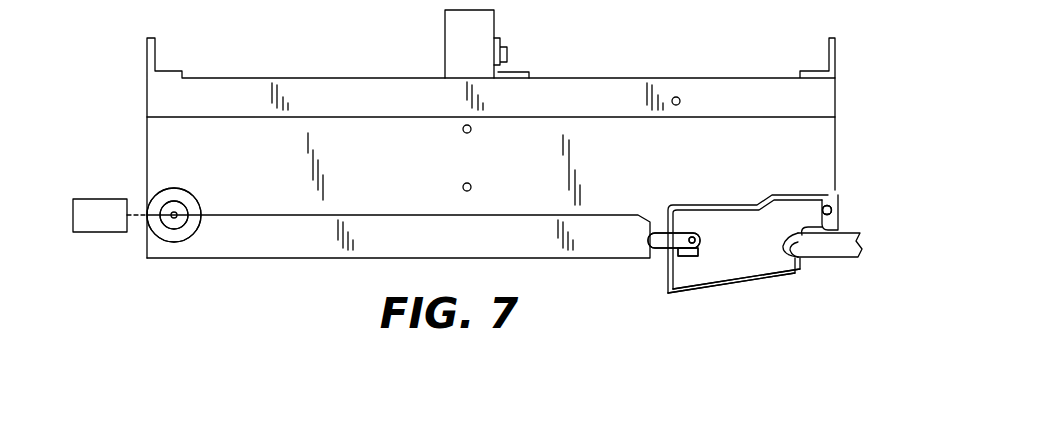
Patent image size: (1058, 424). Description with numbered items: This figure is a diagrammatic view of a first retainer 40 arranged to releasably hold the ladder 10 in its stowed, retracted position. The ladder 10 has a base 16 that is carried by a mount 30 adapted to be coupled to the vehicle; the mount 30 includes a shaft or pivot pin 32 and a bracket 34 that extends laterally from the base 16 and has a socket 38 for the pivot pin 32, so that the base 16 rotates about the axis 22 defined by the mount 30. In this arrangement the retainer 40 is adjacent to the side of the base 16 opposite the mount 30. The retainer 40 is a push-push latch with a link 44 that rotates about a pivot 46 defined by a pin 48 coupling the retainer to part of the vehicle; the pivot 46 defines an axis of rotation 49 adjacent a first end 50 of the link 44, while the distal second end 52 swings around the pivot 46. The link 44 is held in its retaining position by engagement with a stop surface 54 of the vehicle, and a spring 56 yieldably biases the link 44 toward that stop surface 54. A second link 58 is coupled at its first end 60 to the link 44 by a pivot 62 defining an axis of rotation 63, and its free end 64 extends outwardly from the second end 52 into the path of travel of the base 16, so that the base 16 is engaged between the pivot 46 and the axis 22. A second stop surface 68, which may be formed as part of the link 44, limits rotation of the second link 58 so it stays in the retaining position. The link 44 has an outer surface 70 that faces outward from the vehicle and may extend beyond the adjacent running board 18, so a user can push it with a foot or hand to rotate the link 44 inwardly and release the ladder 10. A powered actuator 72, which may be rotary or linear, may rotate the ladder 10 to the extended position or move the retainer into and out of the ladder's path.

The ladder 10 is at (215, 286).
The base 16 is at (306, 244).
The running board 18 is at (637, 70).
The axis 22 is at (171, 213).
The mount 30 is at (145, 248).
The pivot pin 32 is at (175, 229).
The bracket 34 is at (196, 228).
The socket 38 is at (181, 204).
The first retainer 40 is at (691, 163).
The link 44 is at (773, 263).
The pivot 46 is at (832, 202).
The pin 48 is at (827, 210).
The axis of rotation 49 is at (827, 210).
The first end 50 is at (838, 208).
The second end 52 is at (668, 292).
The stop surface 54 is at (798, 258).
The spring 56 is at (818, 222).
The second link 58 is at (704, 268).
The first end 60 is at (700, 240).
The pivot 62 is at (692, 237).
The axis of rotation 63 is at (692, 240).
The free end 64 is at (648, 239).
The second stop surface 68 is at (687, 252).
The outer surface 70 is at (770, 263).
The powered actuator 72 is at (80, 213).